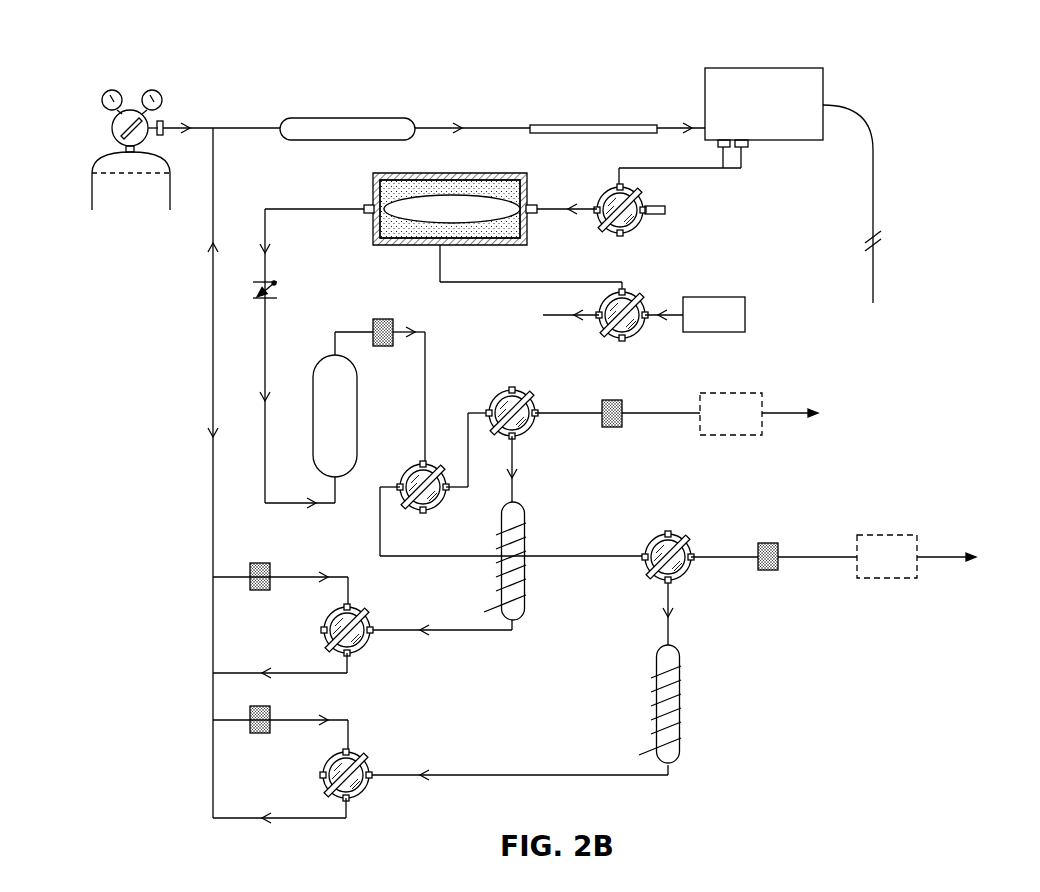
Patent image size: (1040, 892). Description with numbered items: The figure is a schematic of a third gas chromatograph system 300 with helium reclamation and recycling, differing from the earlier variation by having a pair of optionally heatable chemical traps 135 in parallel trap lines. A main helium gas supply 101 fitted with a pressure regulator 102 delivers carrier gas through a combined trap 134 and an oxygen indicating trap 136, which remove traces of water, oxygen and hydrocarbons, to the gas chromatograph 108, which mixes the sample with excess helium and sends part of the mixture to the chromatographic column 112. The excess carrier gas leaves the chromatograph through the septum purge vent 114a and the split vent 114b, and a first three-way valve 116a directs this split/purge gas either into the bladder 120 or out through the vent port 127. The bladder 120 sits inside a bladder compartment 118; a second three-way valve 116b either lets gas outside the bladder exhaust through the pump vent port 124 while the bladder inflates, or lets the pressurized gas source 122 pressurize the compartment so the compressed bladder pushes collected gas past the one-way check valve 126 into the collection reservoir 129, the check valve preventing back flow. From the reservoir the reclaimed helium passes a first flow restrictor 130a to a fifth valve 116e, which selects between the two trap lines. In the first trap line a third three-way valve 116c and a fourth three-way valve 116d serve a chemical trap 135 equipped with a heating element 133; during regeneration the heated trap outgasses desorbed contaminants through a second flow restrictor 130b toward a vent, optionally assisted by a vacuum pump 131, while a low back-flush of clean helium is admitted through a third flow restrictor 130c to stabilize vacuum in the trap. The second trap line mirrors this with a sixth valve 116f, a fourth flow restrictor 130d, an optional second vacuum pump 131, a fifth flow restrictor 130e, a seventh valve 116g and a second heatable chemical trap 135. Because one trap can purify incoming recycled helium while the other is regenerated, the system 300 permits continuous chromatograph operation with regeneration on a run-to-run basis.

The third gas chromatograph system 300 is at (449, 42).
The main helium gas supply 101 is at (100, 166).
The pressure regulator 102 is at (162, 84).
The combined trap 134 is at (322, 118).
The oxygen indicating trap 136 is at (555, 125).
The gas chromatograph 108 is at (705, 85).
The septum purge vent 114a is at (718, 144).
The split vent 114b is at (748, 145).
The chromatographic column 112 is at (873, 272).
The first 3-way valve 116a is at (640, 230).
The second 3-way valve 116b is at (644, 336).
The third 3-way valve 116c is at (533, 428).
The fourth 3-way valve 116d is at (369, 646).
The fifth valve 116e is at (435, 505).
The sixth valve 116f is at (646, 568).
The seventh valve 116g is at (369, 791).
The vent port 127 is at (672, 213).
The bladder compartment 118 is at (372, 182).
The bladder 120 is at (472, 222).
The one-way check valve 126 is at (278, 262).
The pressurized gas source 122 is at (734, 328).
The pump vent port 124 is at (561, 318).
The collection reservoir 129 is at (357, 396).
The first flow restrictor 130a is at (393, 330).
The second flow restrictor 130b is at (620, 427).
The third flow restrictor 130c is at (272, 571).
The fourth flow restrictor 130d is at (778, 570).
The fifth flow restrictor 130e is at (272, 714).
The vacuum pump 131 is at (742, 436).
The heating element 133 is at (538, 508).
The optionally heatable chemical trap 135 is at (534, 494).